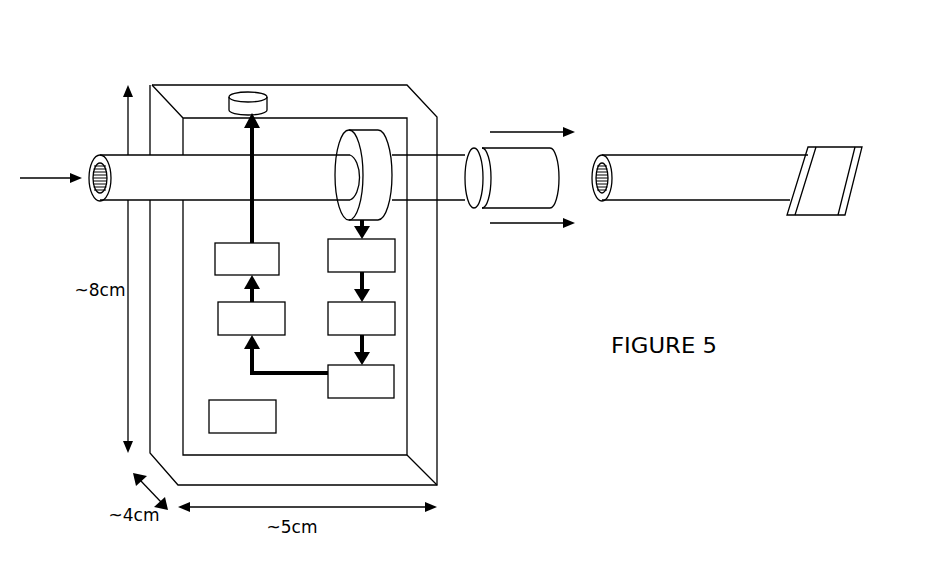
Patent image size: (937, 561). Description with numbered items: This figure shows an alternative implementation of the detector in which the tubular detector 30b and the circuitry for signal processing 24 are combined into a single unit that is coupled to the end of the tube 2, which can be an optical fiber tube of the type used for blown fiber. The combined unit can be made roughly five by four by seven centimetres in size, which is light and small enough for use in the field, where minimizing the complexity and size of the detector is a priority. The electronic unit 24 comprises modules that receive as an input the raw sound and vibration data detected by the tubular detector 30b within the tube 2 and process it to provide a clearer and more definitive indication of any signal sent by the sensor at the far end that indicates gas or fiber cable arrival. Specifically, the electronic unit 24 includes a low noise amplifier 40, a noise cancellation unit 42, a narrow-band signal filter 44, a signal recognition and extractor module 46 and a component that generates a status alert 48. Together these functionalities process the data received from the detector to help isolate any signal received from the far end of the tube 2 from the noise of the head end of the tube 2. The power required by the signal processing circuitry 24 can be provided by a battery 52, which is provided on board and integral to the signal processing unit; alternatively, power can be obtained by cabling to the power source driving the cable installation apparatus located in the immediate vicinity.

The electronic unit 24 is at (290, 69).
The tubular detector 30b is at (465, 122).
The tube 2 is at (681, 153).
The low noise amplifier 40 is at (361, 255).
The noise cancellation unit 42 is at (361, 318).
The narrow-band signal filter 44 is at (361, 381).
The signal recognition and extractor module 46 is at (251, 318).
The status alert component 48 is at (247, 259).
The battery 52 is at (242, 416).